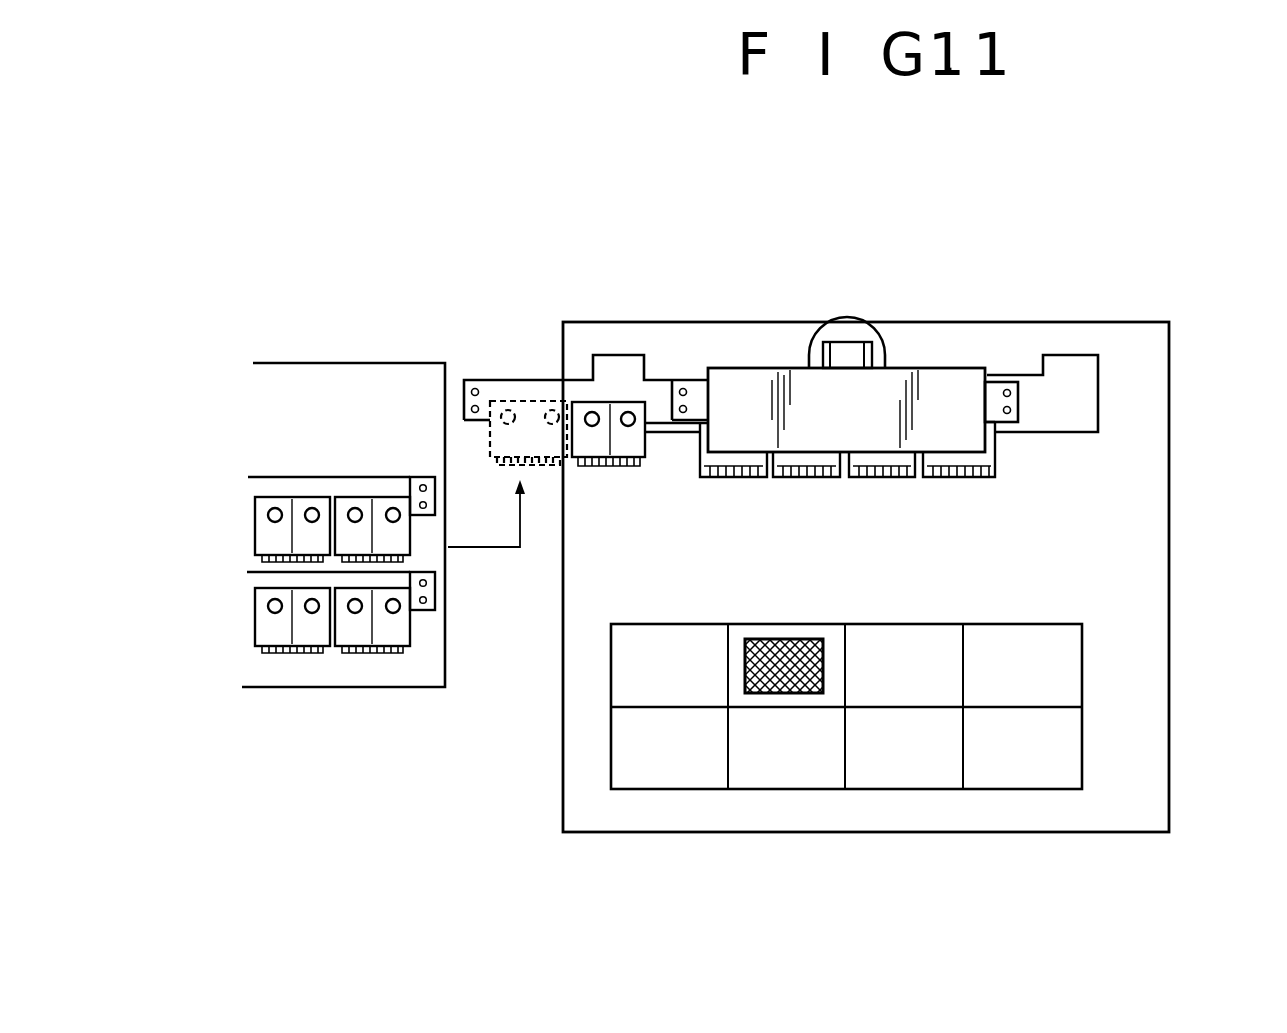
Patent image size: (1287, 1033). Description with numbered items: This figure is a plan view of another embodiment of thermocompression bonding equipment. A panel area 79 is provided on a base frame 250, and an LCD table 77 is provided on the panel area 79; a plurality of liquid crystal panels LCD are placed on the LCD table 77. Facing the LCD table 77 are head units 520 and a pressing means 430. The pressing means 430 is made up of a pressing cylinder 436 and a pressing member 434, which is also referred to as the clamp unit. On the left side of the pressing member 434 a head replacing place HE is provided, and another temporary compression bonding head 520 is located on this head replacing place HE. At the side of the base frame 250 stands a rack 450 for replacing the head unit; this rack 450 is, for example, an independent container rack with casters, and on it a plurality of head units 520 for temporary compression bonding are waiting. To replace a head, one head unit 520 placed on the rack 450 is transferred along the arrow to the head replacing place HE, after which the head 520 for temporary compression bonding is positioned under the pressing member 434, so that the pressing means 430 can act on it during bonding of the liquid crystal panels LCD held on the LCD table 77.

The base frame 250 is at (1169, 728).
The pressing means 430 is at (846, 303).
The pressing member 434 is at (773, 368).
The pressing cylinder 436 is at (871, 293).
The head unit 520 is at (258, 535).
The rack 450 is at (242, 658).
The LCD table 77 is at (765, 790).
The panel area 79 is at (1018, 790).
The head replacing place HE is at (548, 358).
The liquid crystal panel LCD is at (777, 639).